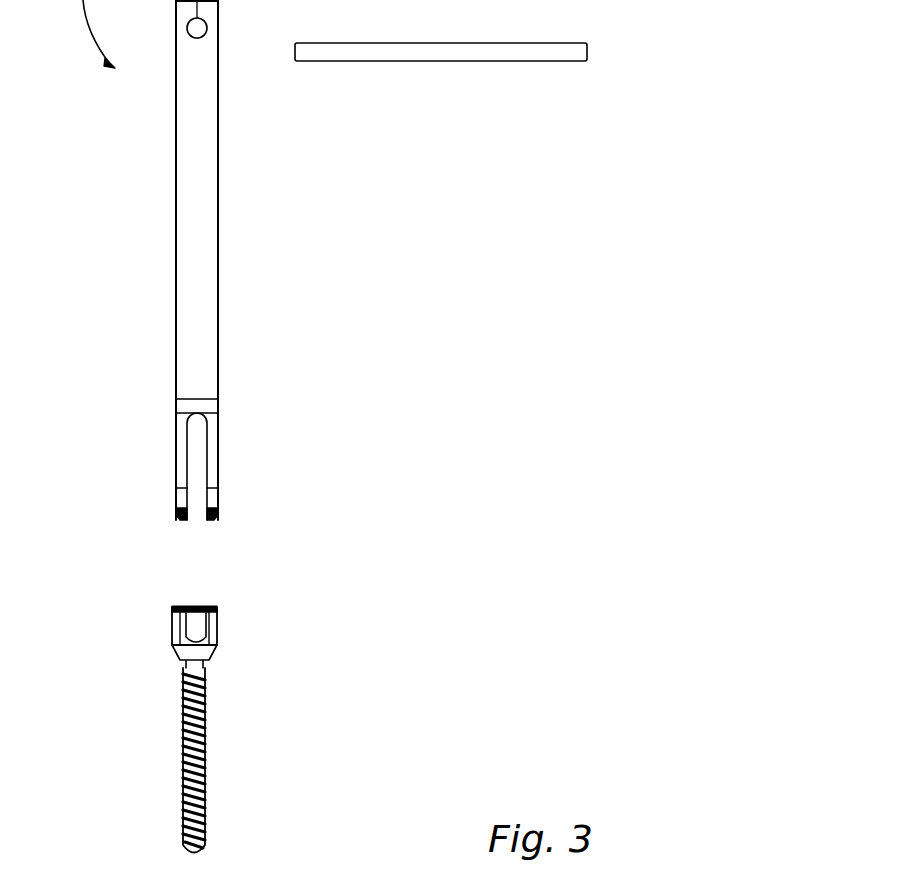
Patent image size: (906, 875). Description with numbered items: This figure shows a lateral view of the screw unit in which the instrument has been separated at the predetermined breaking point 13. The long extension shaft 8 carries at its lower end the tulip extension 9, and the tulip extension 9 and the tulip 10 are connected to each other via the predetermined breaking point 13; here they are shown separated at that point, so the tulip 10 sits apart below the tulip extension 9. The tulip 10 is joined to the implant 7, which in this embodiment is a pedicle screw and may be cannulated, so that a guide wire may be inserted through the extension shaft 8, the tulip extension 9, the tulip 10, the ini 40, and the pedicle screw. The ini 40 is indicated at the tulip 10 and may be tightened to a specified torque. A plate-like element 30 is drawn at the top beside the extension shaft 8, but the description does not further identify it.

The plate 30 is at (423, 52).
The extension shaft 8 is at (218, 250).
The tulip extension 9 is at (218, 458).
The predetermined breaking point 13 is at (211, 521).
The ini 40 is at (183, 600).
The tulip 10 is at (217, 635).
The implant 7 is at (205, 767).